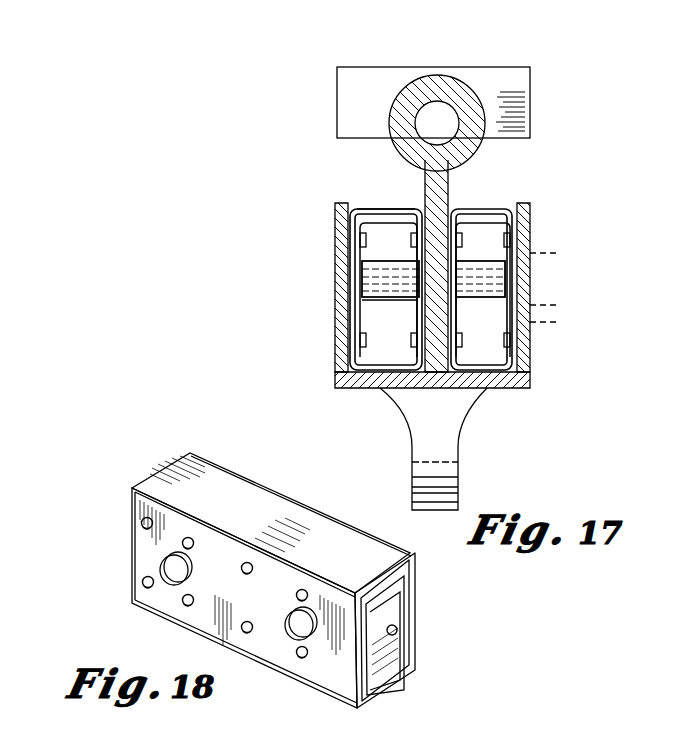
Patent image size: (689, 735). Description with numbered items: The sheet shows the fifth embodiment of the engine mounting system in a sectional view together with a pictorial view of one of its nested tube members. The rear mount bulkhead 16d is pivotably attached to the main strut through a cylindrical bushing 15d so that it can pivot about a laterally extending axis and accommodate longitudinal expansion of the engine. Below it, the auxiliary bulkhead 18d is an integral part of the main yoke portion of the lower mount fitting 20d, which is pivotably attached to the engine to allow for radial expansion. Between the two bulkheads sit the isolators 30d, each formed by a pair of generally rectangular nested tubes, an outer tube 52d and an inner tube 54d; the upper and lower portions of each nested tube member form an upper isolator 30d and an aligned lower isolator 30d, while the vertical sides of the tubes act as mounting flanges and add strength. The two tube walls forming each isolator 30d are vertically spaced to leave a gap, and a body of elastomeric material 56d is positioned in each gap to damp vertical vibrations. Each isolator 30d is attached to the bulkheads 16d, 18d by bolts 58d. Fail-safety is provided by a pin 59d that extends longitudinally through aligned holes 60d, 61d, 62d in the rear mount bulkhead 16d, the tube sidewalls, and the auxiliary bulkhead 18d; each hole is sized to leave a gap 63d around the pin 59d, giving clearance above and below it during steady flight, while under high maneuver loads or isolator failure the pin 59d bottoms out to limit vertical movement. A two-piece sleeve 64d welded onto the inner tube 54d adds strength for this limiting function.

In FIG. 17, the cylindrical bushing 15d is at (460, 92).
In FIG. 17, the rear mount bulkhead 16d is at (448, 188).
In FIG. 17, the auxiliary bulkhead 18d is at (335, 221).
In FIG. 17, the lower mount fitting 20d is at (480, 410).
In FIG. 17, the isolator 30d is at (383, 347).
In FIG. 17, the outer tube 52d is at (384, 209).
In FIG. 18, the outer tube 52d is at (187, 478).
In FIG. 17, the inner tube 54d is at (385, 230).
In FIG. 18, the inner tube 54d is at (398, 617).
In FIG. 17, the body of elastomeric material 56d is at (483, 220).
In FIG. 18, the body of elastomeric material 56d is at (395, 678).
In FIG. 17, the bolts 58d is at (340, 367).
In FIG. 17, the pin 59d is at (365, 330).
In FIG. 17, the hole 60d is at (532, 322).
In FIG. 17, the hole 61d is at (535, 253).
In FIG. 18, the hole 61d is at (176, 575).
In FIG. 17, the hole 62d is at (532, 306).
In FIG. 17, the gap 63d is at (362, 289).
In FIG. 17, the two-piece sleeve 64d is at (376, 388).